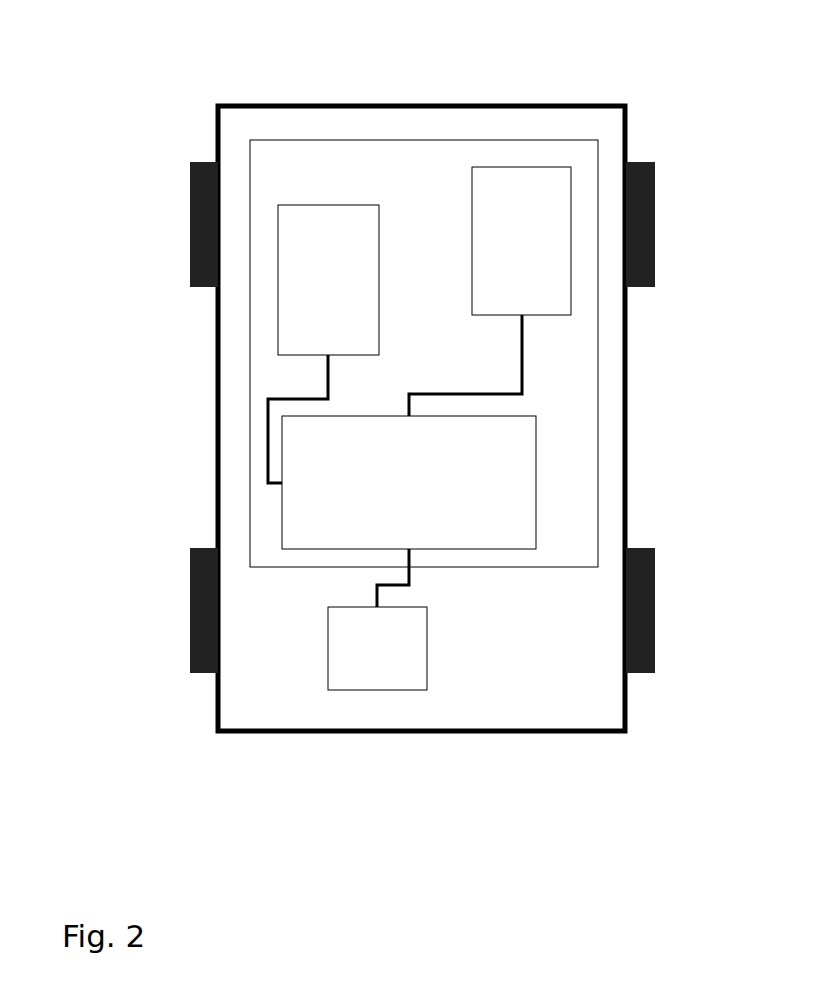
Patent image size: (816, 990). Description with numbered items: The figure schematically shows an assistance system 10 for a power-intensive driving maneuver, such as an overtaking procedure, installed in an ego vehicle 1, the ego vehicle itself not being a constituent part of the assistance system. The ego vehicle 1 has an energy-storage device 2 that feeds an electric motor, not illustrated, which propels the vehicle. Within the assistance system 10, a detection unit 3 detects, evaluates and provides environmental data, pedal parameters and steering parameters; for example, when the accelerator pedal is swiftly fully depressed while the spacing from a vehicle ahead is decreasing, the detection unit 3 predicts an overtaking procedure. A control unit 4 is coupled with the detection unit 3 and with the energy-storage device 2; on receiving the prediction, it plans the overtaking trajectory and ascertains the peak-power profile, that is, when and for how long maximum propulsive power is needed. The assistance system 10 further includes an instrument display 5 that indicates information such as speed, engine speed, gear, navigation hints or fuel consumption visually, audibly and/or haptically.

The ego vehicle 1 is at (625, 418).
The energy-storage device 2 is at (380, 690).
The detection unit 3 is at (328, 207).
The control unit 4 is at (536, 483).
The instrument display 5 is at (522, 167).
The assistance system 10 is at (424, 140).